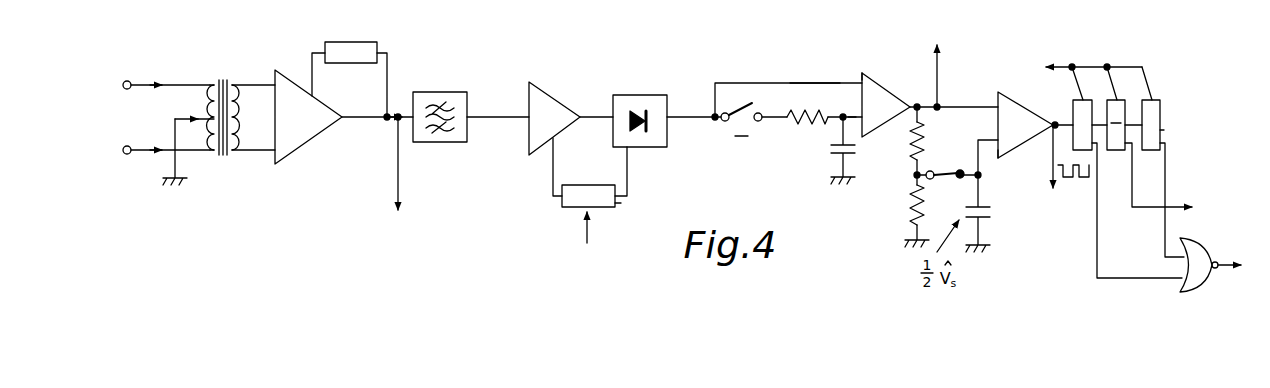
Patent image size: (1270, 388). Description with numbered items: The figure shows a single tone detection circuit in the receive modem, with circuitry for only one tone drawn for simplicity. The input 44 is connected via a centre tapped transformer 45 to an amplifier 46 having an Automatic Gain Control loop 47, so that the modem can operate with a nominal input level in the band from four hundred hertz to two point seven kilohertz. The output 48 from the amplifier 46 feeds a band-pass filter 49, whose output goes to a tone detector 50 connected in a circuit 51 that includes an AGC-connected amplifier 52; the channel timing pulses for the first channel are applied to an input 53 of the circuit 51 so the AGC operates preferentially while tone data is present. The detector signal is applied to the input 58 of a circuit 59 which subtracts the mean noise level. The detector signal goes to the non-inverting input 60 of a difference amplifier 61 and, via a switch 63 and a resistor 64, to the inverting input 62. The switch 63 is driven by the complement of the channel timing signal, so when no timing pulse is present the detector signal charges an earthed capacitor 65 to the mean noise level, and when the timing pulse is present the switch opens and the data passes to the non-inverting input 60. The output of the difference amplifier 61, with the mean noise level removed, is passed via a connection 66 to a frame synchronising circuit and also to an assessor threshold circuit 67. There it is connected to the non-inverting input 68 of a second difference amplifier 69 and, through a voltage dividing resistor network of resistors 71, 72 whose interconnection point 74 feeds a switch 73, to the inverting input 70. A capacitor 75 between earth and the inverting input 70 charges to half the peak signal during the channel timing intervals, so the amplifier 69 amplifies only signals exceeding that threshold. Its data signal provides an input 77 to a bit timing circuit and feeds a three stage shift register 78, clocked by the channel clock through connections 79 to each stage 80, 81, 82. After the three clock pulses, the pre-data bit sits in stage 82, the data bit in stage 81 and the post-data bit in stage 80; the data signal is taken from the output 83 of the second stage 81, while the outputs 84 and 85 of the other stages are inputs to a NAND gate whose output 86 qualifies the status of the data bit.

The input 44 is at (128, 95).
The centre tapped transformer 45 is at (219, 157).
The amplifier 46 is at (297, 140).
The Automatic Gain Control (AGC) loop 47 is at (385, 60).
The output 48 is at (393, 121).
The band-pass filter 49 is at (445, 143).
The tone detector 50 is at (648, 95).
The circuit 51 is at (565, 162).
The AGC-connected amplifier 52 is at (530, 148).
The input 53 is at (618, 204).
The input 58 is at (716, 122).
The circuit 59 is at (819, 81).
The non-inverting input 60 is at (861, 72).
The difference amplifier 61 is at (878, 79).
The inverting input 62 is at (850, 124).
The switch 63 is at (748, 102).
The resistor 64 is at (818, 116).
The earthed capacitor 65 is at (831, 151).
The connection 66 is at (940, 58).
The assessor threshold circuit 67 is at (927, 168).
The non-inverting input 68 is at (960, 107).
The second difference amplifier 69 is at (1024, 107).
The inverting input 70 is at (1000, 153).
The resistor 71 is at (906, 125).
The resistor 72 is at (912, 236).
The switch 73 is at (959, 168).
The interconnection point 74 is at (912, 180).
The capacitor 75 is at (985, 226).
The input 77 is at (1054, 190).
The three stage shift register 78 is at (1164, 92).
The connections 79 is at (1122, 66).
The stage 80 is at (1073, 143).
The second stage 81 is at (1116, 150).
The stage 82 is at (1163, 131).
The output 83 is at (1175, 205).
The output 84 is at (1168, 229).
The output 85 is at (1093, 268).
The output 86 is at (1222, 265).